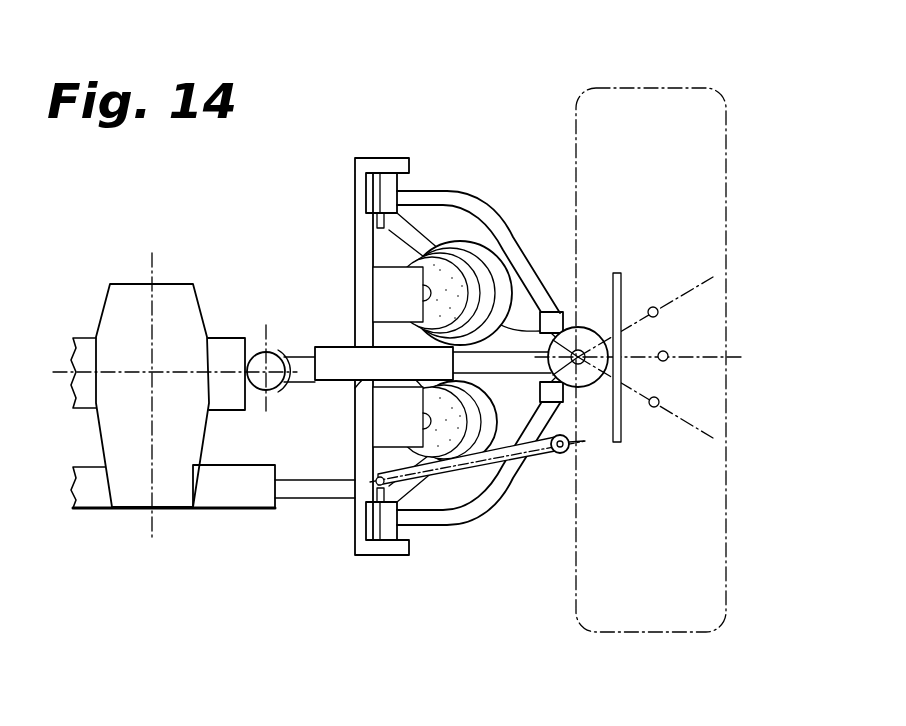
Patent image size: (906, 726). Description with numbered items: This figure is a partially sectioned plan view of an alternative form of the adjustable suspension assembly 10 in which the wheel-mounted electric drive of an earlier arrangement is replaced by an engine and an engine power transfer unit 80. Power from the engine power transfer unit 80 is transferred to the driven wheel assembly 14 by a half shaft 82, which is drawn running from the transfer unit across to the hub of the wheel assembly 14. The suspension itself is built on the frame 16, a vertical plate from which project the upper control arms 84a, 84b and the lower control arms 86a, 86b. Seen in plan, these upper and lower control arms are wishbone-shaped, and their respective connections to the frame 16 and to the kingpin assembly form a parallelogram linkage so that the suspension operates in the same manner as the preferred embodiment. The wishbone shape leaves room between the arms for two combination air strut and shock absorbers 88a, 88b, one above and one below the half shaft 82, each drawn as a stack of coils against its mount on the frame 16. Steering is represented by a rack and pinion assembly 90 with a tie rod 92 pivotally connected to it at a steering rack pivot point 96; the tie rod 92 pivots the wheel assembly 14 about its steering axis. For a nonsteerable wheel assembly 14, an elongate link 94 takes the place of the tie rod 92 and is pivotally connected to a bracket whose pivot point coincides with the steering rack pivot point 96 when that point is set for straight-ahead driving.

The adjustable suspension assembly 10 is at (462, 120).
The wheel assembly 14 is at (726, 79).
The frame 16 is at (354, 183).
The engine power transfer unit 80 is at (207, 322).
The half shaft 82 is at (333, 350).
The upper control arm 84a is at (433, 528).
The upper control arm 84b is at (443, 189).
The lower control arm 86a is at (408, 540).
The lower control arm 86b is at (372, 238).
The combination air strut and shock absorber 88a is at (356, 373).
The combination air strut and shock absorber 88b is at (492, 244).
The rack and pinion assembly 90 is at (243, 513).
The tie rod 92 is at (463, 488).
The elongate link 94 is at (538, 460).
The steering rack pivot point 96 is at (353, 465).